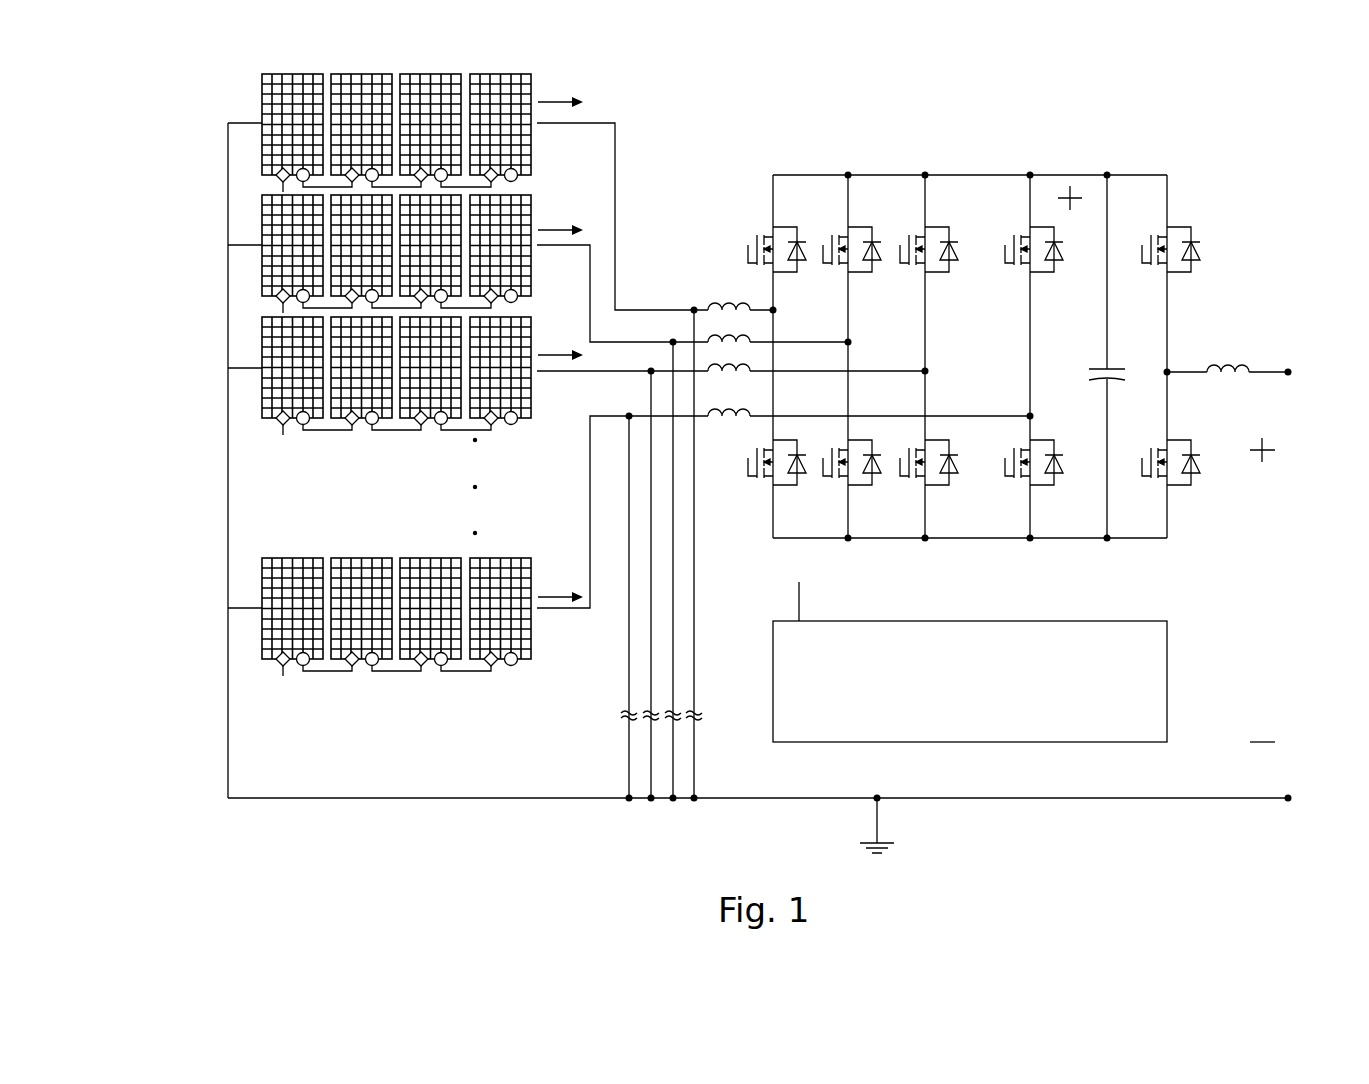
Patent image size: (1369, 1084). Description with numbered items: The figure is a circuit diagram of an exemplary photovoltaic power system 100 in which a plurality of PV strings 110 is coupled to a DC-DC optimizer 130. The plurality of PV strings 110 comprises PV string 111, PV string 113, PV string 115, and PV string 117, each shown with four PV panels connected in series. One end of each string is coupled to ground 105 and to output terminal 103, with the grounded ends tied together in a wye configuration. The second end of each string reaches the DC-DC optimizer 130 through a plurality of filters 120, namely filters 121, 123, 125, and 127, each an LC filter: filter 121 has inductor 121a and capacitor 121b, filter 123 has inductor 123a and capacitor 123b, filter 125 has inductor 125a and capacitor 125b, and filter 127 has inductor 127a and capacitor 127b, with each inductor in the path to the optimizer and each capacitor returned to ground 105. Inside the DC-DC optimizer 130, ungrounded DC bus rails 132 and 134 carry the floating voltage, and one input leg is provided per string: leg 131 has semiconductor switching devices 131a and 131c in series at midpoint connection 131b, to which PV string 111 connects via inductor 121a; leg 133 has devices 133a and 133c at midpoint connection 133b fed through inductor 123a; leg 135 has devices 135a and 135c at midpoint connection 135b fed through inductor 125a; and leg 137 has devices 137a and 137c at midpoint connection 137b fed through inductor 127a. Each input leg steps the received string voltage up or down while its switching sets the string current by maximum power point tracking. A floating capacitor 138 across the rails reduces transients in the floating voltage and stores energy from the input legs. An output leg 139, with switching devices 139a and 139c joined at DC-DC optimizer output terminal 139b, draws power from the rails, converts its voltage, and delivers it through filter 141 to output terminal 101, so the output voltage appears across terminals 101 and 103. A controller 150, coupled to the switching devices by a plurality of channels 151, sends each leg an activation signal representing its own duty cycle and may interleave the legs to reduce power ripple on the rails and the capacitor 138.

The photovoltaic power system 100 is at (523, 827).
The output terminal 101 is at (1289, 370).
The output terminal 103 is at (1289, 796).
The ground 105 is at (893, 845).
The plurality of PV strings 110 is at (182, 751).
The PV string 111 is at (262, 80).
The PV string 113 is at (262, 202).
The PV string 115 is at (262, 322).
The PV string 117 is at (262, 565).
The plurality of filters 120 is at (723, 525).
The filter 121 is at (694, 300).
The inductor 121a is at (738, 290).
The capacitor 121b is at (698, 710).
The filter 123 is at (673, 330).
The inductor 123a is at (742, 348).
The capacitor 123b is at (674, 722).
The filter 125 is at (648, 377).
The inductor 125a is at (742, 380).
The capacitor 125b is at (652, 722).
The filter 127 is at (627, 422).
The inductor 127a is at (722, 424).
The capacitor 127b is at (626, 710).
The DC-DC optimizer 130 is at (1203, 161).
The input leg 131 is at (773, 175).
The semiconductor switching device 131a is at (776, 274).
The midpoint connection 131b is at (775, 311).
The semiconductor switching device 131c is at (776, 486).
The DC bus rail 132 is at (812, 175).
The input leg 133 is at (848, 175).
The semiconductor switching device 133a is at (851, 274).
The midpoint connection 133b is at (850, 342).
The semiconductor switching device 133c is at (851, 486).
The DC bus rail 134 is at (905, 540).
The input leg 135 is at (925, 175).
The semiconductor switching device 135a is at (928, 274).
The midpoint connection 135b is at (927, 371).
The semiconductor switching device 135c is at (928, 486).
The input leg 137 is at (1030, 175).
The semiconductor switching device 137a is at (1033, 274).
The midpoint connection 137b is at (1033, 416).
The semiconductor switching device 137c is at (1083, 526).
The floating capacitor 138 is at (1107, 175).
The output leg 139 is at (1167, 175).
The semiconductor switching device 139a is at (1169, 226).
The DC-DC optimizer output terminal 139b is at (1168, 370).
The semiconductor switching device 139c is at (1169, 440).
The filter 141 is at (1240, 380).
The controller 150 is at (1168, 625).
The plurality of channels 151 is at (799, 588).